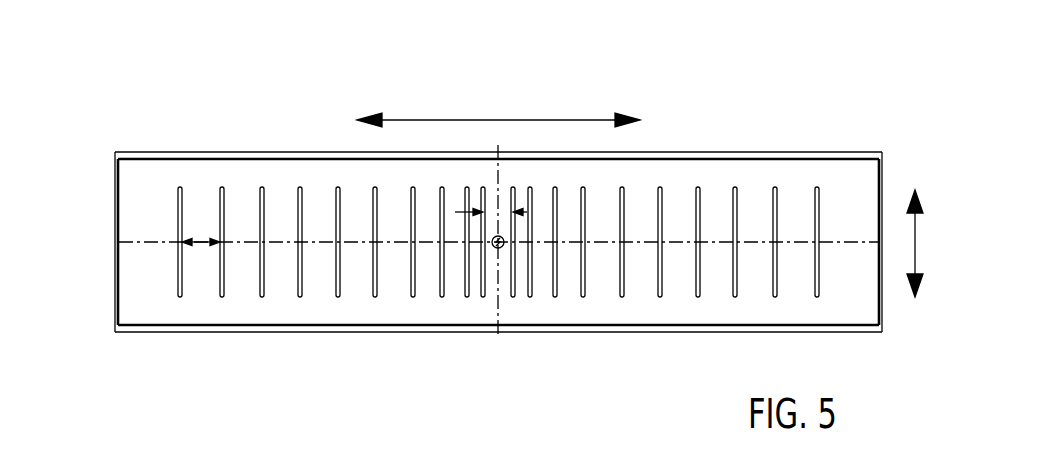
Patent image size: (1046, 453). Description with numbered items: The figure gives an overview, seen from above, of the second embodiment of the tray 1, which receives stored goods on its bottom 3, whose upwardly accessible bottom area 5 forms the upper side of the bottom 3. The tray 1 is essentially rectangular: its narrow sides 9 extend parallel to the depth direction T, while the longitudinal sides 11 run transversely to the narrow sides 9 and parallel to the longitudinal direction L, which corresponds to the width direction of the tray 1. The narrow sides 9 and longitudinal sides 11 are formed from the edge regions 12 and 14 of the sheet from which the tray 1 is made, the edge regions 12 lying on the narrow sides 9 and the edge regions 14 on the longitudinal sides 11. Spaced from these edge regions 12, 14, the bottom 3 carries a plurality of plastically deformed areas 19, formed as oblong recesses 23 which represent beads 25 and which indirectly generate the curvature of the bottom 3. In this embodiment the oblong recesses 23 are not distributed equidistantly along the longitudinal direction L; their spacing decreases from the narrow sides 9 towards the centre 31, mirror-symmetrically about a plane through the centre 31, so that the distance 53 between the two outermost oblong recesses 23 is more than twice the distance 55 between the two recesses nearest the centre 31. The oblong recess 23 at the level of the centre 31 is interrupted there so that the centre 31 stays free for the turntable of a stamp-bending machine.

The tray 1 is at (498, 239).
The bottom 3 is at (498, 242).
The bottom area 5 is at (498, 242).
The narrow sides 9 is at (116, 172).
The longitudinal sides 11 is at (756, 153).
The edge regions 12 is at (899, 174).
The edge regions 14 is at (662, 126).
The plastically deformed area 19 is at (293, 198).
The oblong recess 23 is at (293, 198).
The bead 25 is at (268, 186).
The centre 31 is at (503, 250).
The distance 53 is at (205, 238).
The distance 55 is at (486, 192).
The longitudinal direction L is at (503, 119).
The depth direction T is at (918, 243).